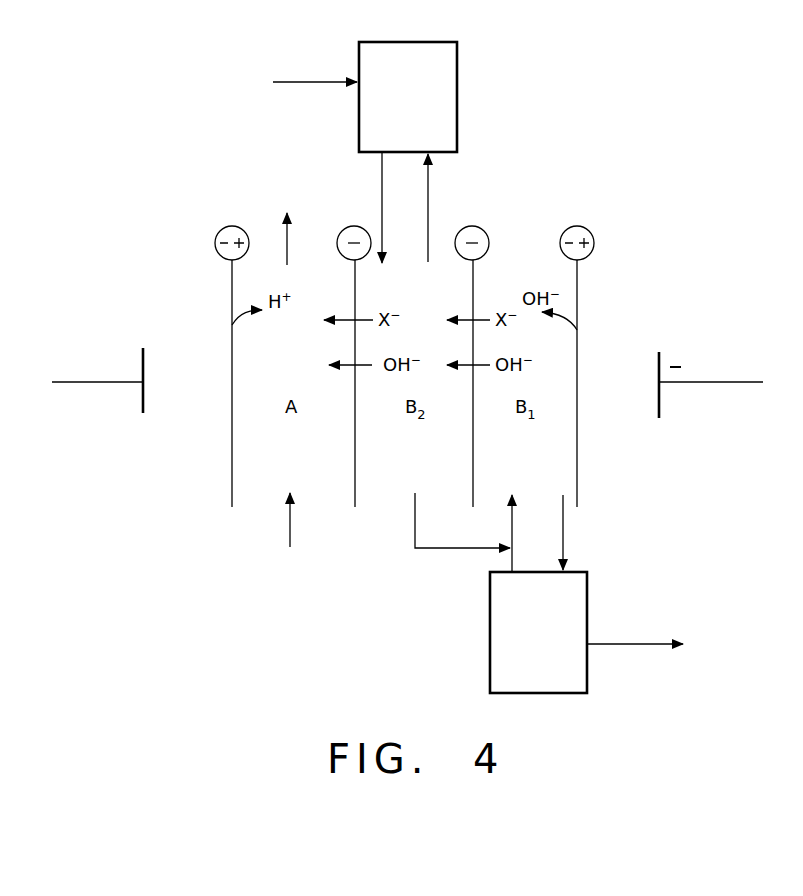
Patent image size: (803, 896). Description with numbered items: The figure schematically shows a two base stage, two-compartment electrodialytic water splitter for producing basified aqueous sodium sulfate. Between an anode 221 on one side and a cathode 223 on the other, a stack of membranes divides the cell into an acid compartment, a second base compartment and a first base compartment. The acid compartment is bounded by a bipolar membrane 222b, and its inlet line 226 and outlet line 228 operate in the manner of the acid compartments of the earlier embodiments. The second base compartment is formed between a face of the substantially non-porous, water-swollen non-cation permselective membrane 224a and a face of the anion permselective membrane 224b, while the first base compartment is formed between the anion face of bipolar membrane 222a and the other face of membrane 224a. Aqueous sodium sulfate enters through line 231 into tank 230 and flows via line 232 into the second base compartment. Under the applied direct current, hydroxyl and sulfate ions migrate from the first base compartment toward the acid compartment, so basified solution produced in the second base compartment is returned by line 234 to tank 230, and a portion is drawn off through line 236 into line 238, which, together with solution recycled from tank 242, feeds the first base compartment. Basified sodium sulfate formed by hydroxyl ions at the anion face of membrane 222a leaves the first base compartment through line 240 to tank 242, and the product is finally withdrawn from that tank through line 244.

The anode 221 is at (102, 385).
The bipolar membrane 222a is at (578, 480).
The bipolar membrane 222b is at (233, 480).
The cathode 223 is at (715, 385).
The substantially non-porous, water-swollen non-cation permselective membrane 224a is at (473, 481).
The anion permselective membrane 224b is at (357, 485).
The acid compartment inlet line 226 is at (288, 535).
The acid compartment outlet line 228 is at (283, 228).
The tank 230 is at (457, 57).
The line 231 is at (298, 82).
The line 232 is at (382, 186).
The line 234 is at (430, 193).
The line 236 is at (433, 548).
The line 238 is at (513, 522).
The line 240 is at (565, 541).
The tank 242 is at (500, 683).
The line 244 is at (617, 645).